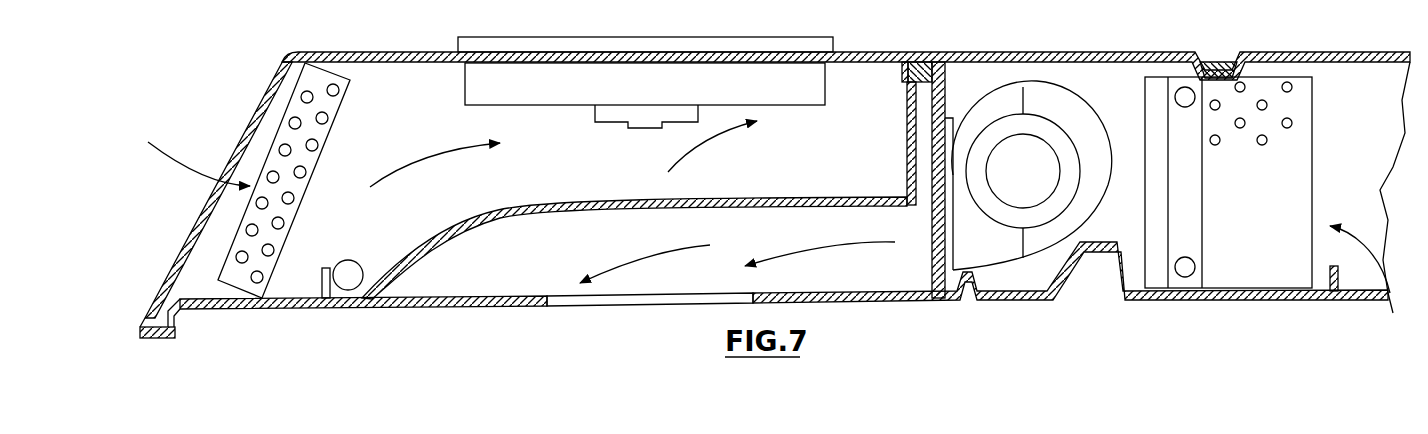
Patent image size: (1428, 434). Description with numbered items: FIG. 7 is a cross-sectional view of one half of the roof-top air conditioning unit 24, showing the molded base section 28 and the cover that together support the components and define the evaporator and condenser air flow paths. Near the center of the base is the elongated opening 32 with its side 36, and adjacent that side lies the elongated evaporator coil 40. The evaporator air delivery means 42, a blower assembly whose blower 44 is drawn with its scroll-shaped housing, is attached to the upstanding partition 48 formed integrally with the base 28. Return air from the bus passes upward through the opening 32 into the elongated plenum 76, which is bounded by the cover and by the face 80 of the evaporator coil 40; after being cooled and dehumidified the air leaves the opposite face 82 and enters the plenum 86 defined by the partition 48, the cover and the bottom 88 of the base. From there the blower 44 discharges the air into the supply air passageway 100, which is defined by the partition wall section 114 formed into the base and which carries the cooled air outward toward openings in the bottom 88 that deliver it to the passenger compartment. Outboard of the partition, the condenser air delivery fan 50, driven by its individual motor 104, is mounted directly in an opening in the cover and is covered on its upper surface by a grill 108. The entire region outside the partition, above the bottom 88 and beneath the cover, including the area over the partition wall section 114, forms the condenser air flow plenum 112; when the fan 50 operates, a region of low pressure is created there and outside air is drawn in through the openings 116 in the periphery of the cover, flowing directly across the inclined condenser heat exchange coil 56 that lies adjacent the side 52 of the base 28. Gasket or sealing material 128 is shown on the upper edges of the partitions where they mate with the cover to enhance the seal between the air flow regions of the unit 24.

The housing top wall 24 is at (870, 35).
The base section 28 is at (290, 310).
The elongated opening 32 is at (1358, 293).
The side of the elongated opening 36 is at (1338, 276).
The evaporator coil 40 is at (1252, 280).
The evaporator air delivery means 42 is at (1079, 74).
The blower 44 is at (1083, 106).
The partition 48 is at (943, 80).
The condenser air delivery fan 50 is at (465, 106).
The side of the base 52 is at (162, 340).
The condenser heat exchange coil 56 is at (276, 130).
The elongated plenum 76 is at (1366, 138).
The face of the evaporator coil 80 is at (1315, 183).
The opposite face of the evaporator coil 82 is at (1143, 237).
The plenum 86 is at (988, 86).
The bottom of the base 88 is at (447, 288).
The supply air passageway 100 is at (508, 281).
The motor 104 is at (672, 128).
The grill 108 is at (638, 43).
The condenser air flow plenum 112 is at (408, 243).
The partition wall section 114 is at (732, 200).
The opening 116 is at (173, 268).
The gasket or sealing material 128 is at (917, 62).